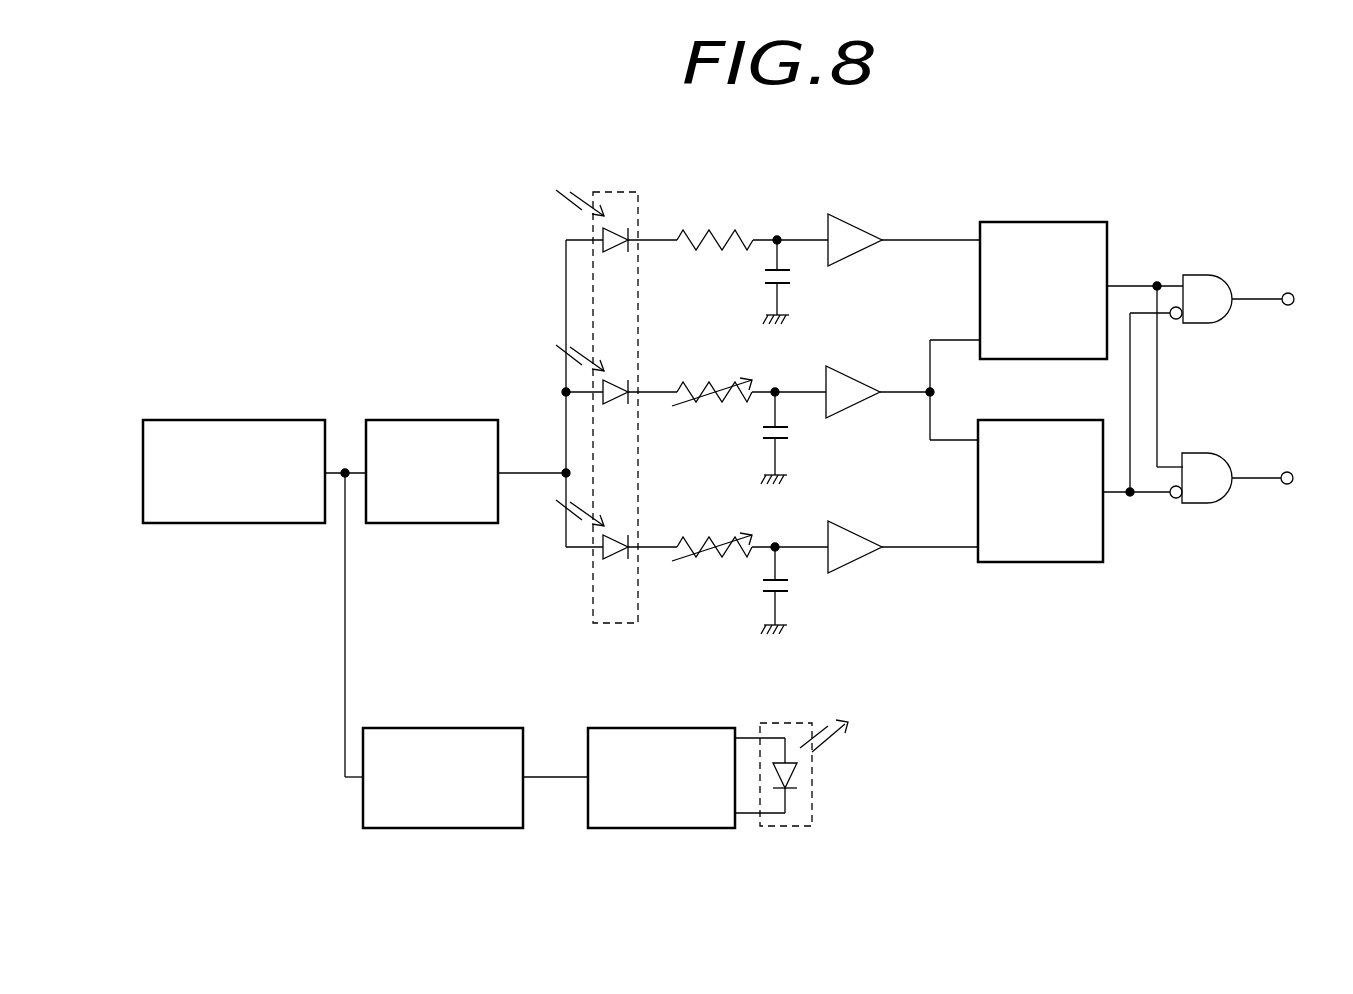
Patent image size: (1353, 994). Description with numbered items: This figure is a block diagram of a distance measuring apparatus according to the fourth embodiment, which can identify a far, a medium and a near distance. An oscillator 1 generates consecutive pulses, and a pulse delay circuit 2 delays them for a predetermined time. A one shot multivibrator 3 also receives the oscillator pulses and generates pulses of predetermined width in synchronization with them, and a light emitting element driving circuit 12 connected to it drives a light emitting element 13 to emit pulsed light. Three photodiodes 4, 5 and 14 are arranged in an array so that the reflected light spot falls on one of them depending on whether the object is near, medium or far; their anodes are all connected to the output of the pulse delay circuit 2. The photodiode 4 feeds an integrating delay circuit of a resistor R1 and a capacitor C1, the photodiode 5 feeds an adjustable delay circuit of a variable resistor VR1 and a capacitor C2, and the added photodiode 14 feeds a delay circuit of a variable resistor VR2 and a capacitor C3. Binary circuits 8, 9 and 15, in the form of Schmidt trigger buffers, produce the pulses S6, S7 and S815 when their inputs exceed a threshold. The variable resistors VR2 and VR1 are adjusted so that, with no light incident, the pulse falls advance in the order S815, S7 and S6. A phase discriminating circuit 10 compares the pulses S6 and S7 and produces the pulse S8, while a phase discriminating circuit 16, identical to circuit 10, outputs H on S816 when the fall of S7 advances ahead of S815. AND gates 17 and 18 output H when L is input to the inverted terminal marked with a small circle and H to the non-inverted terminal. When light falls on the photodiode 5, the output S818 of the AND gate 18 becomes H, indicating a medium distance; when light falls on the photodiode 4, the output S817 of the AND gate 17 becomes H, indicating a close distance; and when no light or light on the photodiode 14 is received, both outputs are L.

The oscillator 1 is at (220, 420).
The pulse delay circuit 2 is at (418, 420).
The one shot multivibrator 3 is at (412, 828).
The photodiode 4 is at (622, 252).
The photodiode 5 is at (622, 404).
The photodiode 14 is at (622, 559).
The binary circuit 8 is at (852, 228).
The binary circuit 9 is at (852, 380).
The binary circuit 15 is at (854, 535).
The phase discriminating circuit 10 is at (1028, 222).
The phase discriminating circuit 16 is at (1034, 562).
The light emitting element driving circuit 12 is at (635, 828).
The light emitting element 13 is at (795, 770).
The AND gate 17 is at (1206, 275).
The AND gate 18 is at (1205, 503).
The resistor R1 is at (708, 230).
The variable resistor VR1 is at (708, 383).
The variable resistor VR2 is at (708, 537).
The capacitor C1 is at (790, 283).
The capacitor C2 is at (788, 436).
The capacitor C3 is at (788, 589).
The pulse S6 is at (928, 238).
The pulse S7 is at (908, 385).
The pulse S8 is at (1132, 284).
The pulse S815 is at (928, 548).
The output signal S816 is at (1122, 500).
The output S817 is at (1288, 292).
The output S818 is at (1288, 470).